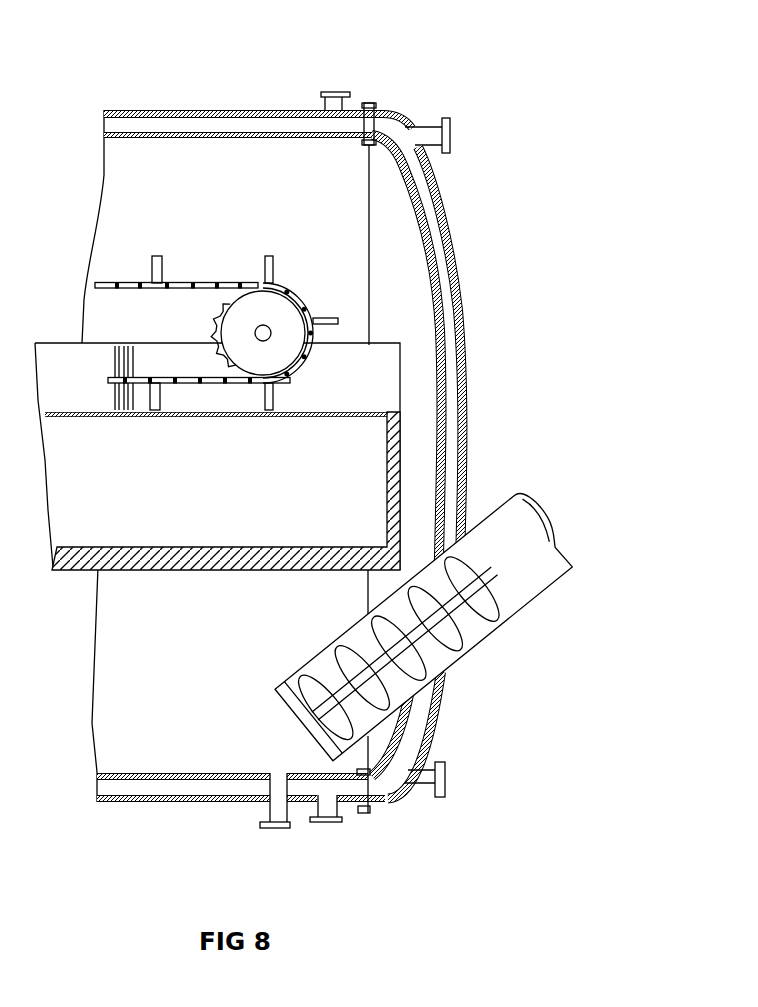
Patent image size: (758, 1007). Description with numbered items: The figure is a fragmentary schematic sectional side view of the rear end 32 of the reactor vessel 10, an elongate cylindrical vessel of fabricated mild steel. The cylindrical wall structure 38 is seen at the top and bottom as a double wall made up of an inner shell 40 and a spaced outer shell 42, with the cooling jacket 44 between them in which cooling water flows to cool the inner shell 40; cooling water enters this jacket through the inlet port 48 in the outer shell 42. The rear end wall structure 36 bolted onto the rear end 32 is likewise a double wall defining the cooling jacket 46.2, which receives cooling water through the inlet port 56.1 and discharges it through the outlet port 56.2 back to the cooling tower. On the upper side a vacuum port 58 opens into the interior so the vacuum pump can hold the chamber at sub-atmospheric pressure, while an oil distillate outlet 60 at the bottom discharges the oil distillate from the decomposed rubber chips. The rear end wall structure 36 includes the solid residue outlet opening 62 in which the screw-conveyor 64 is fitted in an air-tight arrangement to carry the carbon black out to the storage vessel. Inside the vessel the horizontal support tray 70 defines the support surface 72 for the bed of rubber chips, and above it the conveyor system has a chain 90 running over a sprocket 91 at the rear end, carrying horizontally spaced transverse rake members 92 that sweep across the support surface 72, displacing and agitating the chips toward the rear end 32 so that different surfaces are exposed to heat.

The reactor vessel 10 is at (283, 73).
The rear end 32 is at (478, 402).
The rear end wall structure 36 is at (447, 710).
The cylindrical wall structure 38 is at (207, 108).
The inner shell 40 is at (130, 778).
The outer shell 42 is at (165, 801).
The cooling jacket 44 is at (171, 118).
The cooling jacket 46.2 is at (435, 273).
The inlet port 48 is at (324, 822).
The inlet port 56.1 is at (425, 784).
The outlet port 56.2 is at (450, 130).
The vacuum port 58 is at (337, 92).
The oil distillate outlet 60 is at (268, 818).
The solid residue outlet opening 62 is at (452, 672).
The screw-conveyor 64 is at (542, 578).
The support tray 70 is at (125, 418).
The support surface 72 is at (63, 407).
The chain 90 is at (190, 283).
The sprockets 91 is at (218, 305).
The rake members 92 is at (155, 262).